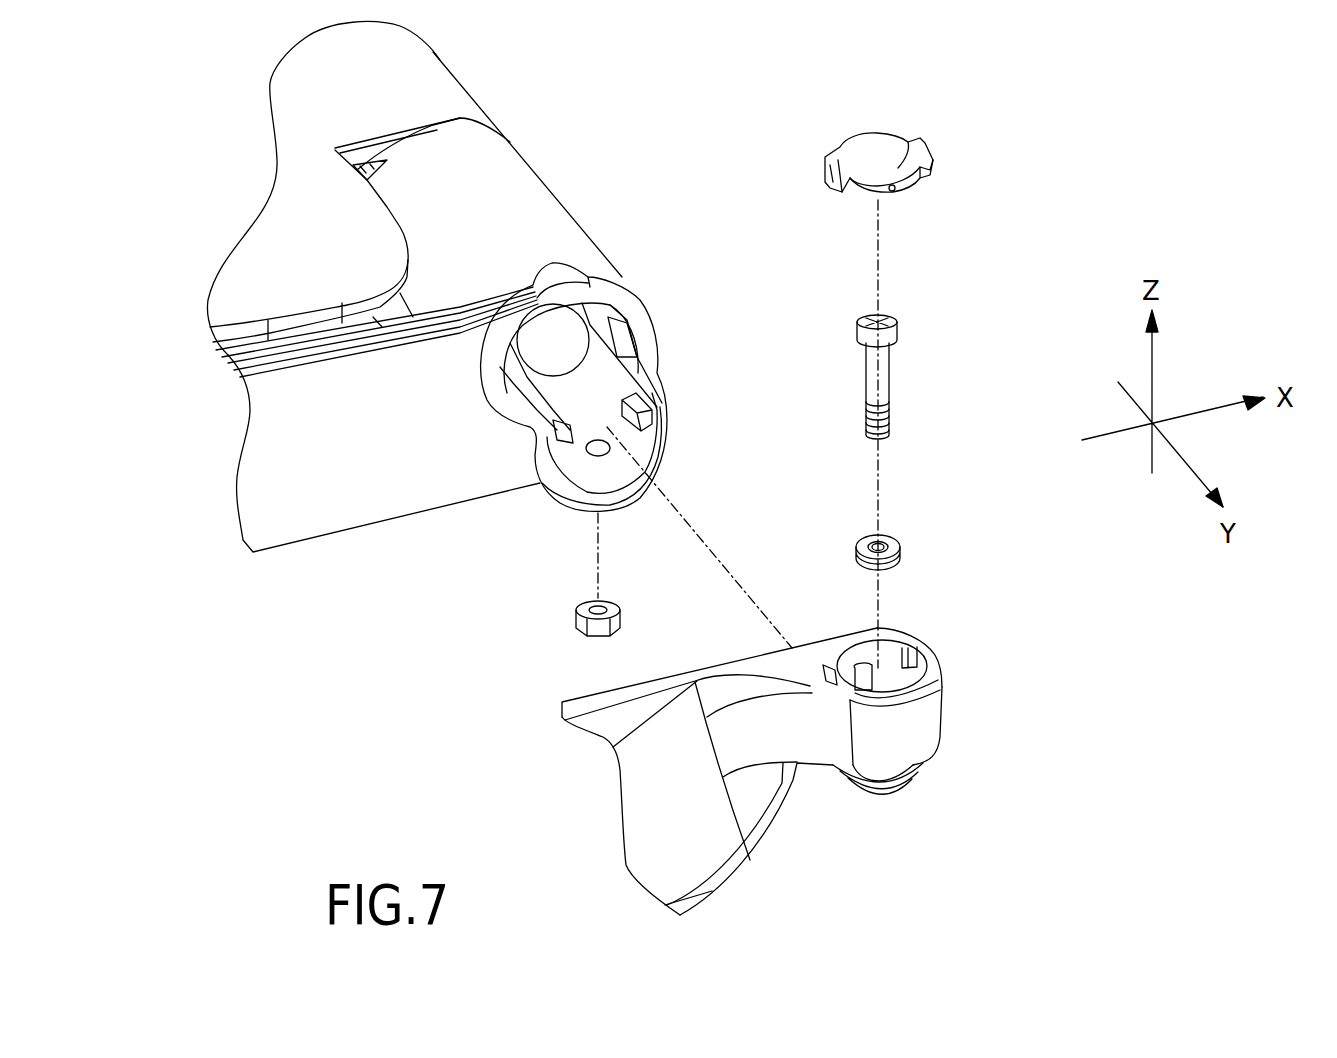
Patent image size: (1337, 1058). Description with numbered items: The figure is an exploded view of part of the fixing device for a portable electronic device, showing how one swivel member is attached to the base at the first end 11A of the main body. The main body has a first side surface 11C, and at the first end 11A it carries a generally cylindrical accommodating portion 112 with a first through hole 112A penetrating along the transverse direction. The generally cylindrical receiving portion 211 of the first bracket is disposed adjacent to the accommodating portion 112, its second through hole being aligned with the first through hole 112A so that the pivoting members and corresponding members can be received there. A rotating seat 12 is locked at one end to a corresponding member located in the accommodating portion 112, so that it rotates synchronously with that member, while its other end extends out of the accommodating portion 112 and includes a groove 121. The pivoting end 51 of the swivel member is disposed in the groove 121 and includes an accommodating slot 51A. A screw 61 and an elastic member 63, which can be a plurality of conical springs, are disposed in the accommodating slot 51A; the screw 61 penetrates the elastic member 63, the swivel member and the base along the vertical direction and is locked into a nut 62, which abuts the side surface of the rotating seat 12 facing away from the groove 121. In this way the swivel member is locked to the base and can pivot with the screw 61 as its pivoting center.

The receiving portion 211 is at (447, 77).
The accommodating portion 112 is at (547, 198).
The first end 11A is at (655, 302).
The first through hole 112A is at (568, 357).
The groove 121 is at (652, 452).
The rotating seat 12 is at (560, 480).
The first side surface 11C is at (357, 503).
The screw 61 is at (880, 377).
The elastic member 63 is at (897, 538).
The nut 62 is at (585, 623).
The accommodating slot 51A is at (890, 645).
The pivoting end 51 is at (935, 723).